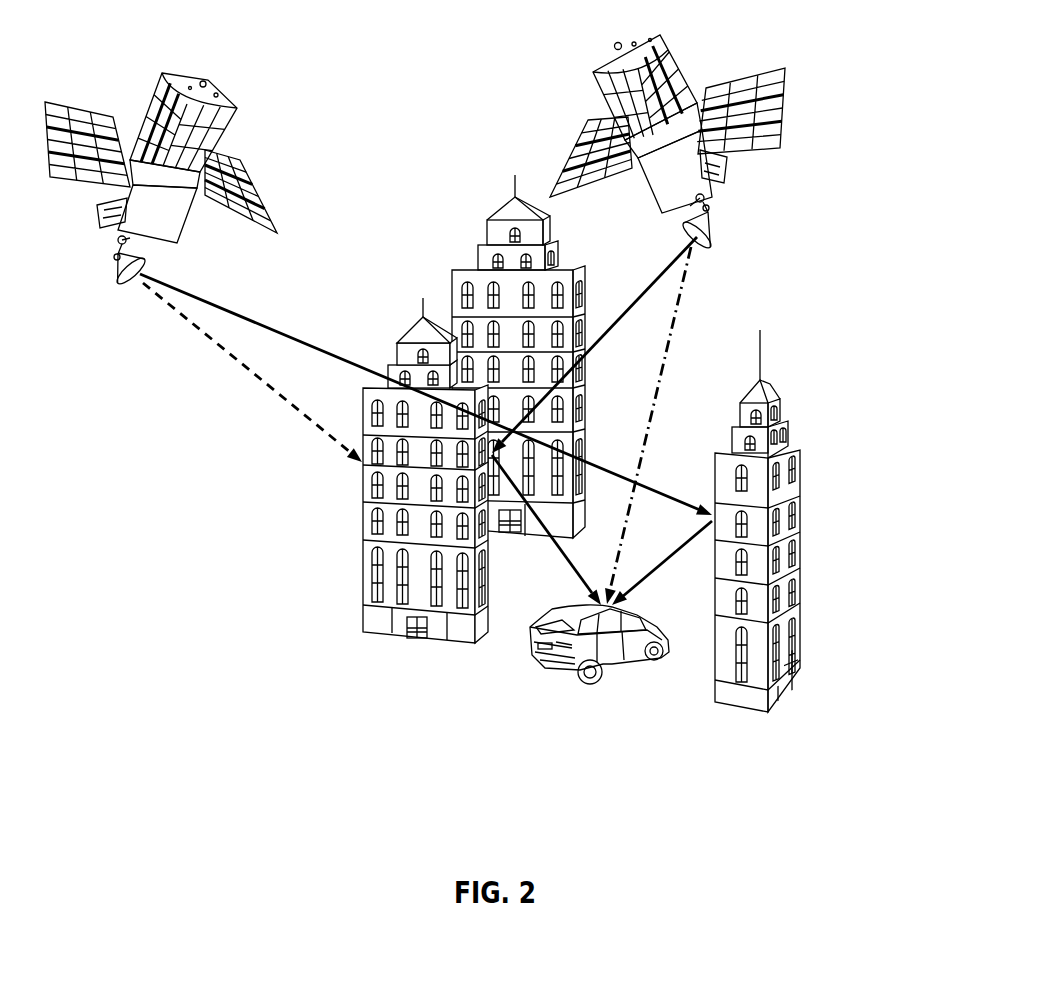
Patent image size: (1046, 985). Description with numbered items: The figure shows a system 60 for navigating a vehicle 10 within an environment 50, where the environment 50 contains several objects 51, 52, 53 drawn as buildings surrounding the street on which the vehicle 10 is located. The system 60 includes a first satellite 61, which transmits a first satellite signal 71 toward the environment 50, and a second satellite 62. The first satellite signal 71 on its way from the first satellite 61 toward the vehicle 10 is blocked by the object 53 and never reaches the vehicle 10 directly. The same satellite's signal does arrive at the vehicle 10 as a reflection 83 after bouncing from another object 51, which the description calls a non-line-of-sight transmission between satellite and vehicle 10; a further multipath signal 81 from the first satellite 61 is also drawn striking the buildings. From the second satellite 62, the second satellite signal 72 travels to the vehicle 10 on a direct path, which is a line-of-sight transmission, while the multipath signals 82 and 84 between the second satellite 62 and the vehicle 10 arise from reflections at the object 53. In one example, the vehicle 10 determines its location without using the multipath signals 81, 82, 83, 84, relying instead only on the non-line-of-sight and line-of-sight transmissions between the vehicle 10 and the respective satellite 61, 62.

The vehicle 10 is at (633, 657).
The environment 50 is at (952, 310).
The object 51 is at (800, 472).
The object 52 is at (467, 268).
The object 53 is at (362, 565).
The system 60 is at (898, 37).
The first satellite 61 is at (163, 75).
The second satellite 62 is at (742, 78).
The first satellite signal 71 is at (248, 368).
The second satellite signal 72 is at (674, 318).
The multipath signal 81 is at (313, 350).
The multipath signal 82 is at (637, 300).
The reflection 83 is at (664, 563).
The multipath signal 84 is at (551, 538).